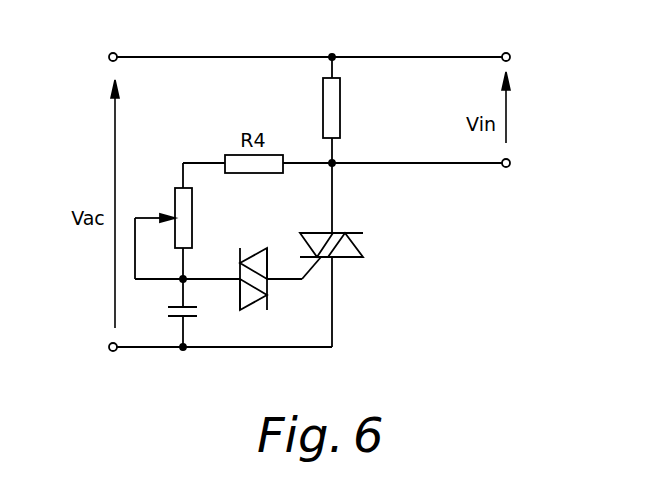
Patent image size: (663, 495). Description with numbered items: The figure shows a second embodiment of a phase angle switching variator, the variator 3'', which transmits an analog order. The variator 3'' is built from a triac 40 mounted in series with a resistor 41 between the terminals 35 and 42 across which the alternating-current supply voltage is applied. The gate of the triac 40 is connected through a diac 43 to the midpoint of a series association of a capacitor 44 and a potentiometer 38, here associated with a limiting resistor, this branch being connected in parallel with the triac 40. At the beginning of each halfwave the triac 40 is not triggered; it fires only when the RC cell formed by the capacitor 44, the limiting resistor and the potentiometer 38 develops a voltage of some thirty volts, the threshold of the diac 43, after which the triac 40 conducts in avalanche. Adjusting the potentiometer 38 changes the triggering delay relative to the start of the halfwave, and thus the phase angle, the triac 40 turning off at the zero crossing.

The terminal 35 is at (110, 53).
The terminal 42 is at (112, 352).
The resistor 41 is at (341, 108).
The potentiometer 38 is at (175, 200).
The capacitor 44 is at (168, 316).
The diac 43 is at (268, 300).
The triac 40 is at (363, 243).
The variator 3'' is at (493, 254).